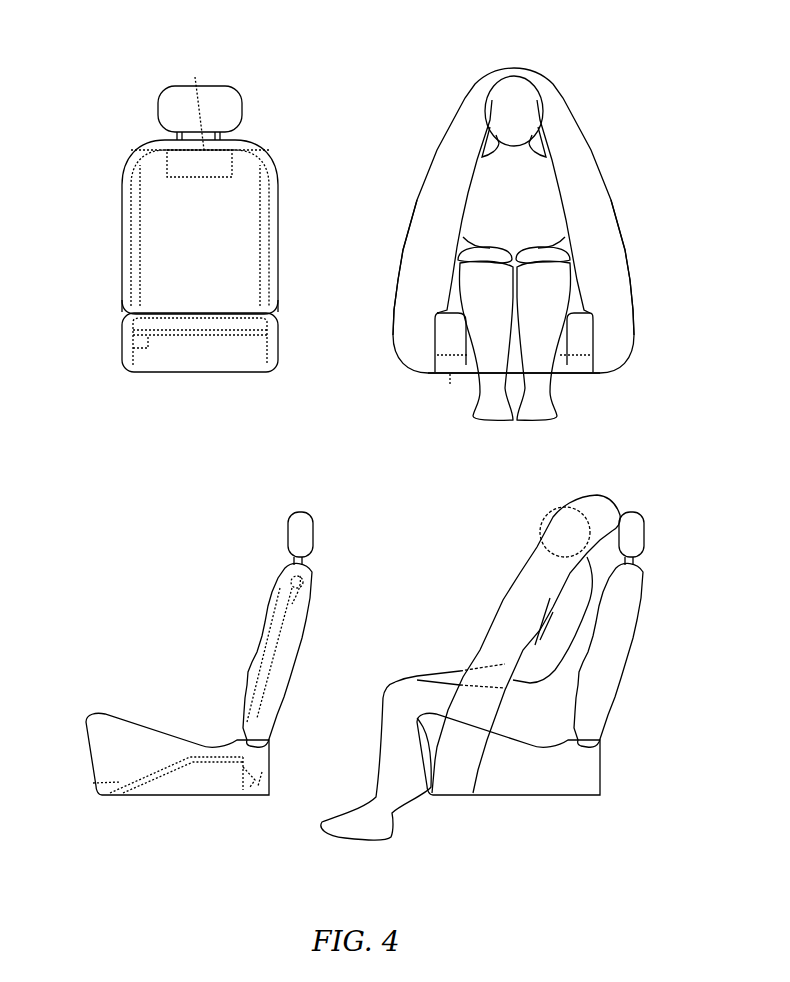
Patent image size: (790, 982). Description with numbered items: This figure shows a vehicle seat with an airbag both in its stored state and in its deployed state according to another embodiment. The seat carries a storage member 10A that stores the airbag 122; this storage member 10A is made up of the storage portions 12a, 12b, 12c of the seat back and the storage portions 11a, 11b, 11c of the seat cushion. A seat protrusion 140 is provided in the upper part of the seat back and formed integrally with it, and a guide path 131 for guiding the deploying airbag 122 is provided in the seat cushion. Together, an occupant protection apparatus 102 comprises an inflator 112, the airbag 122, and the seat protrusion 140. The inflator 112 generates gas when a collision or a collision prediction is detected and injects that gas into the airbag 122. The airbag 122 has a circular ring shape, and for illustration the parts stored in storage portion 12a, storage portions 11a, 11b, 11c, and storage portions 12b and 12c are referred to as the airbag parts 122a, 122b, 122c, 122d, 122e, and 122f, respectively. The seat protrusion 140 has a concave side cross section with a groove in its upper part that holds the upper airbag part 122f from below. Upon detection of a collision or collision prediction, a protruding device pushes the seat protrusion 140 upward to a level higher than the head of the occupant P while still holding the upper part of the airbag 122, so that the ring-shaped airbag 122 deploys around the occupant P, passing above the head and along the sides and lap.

The storage member 10A is at (242, 148).
The storage portion of the seat cushion 11a is at (279, 323).
The storage portion of the seat cushion 11b is at (130, 342).
The storage portion of the seat cushion 11c is at (122, 325).
The storage portion of the seat back 12a is at (279, 233).
The storage portion of the seat back 12b is at (122, 233).
The storage portion of the seat back 12c is at (150, 142).
The occupant protection apparatus 102 is at (513, 203).
The inflator 112 is at (250, 777).
The airbag 122 is at (566, 114).
The airbag part 122a is at (604, 208).
The airbag part 122b is at (620, 339).
The airbag part 122c is at (450, 384).
The airbag part 122d is at (396, 336).
The airbag part 122e is at (417, 207).
The airbag part 122f is at (472, 116).
The guide path 131 is at (102, 786).
The seat protrusion 140 is at (337, 587).
The occupant P is at (513, 68).